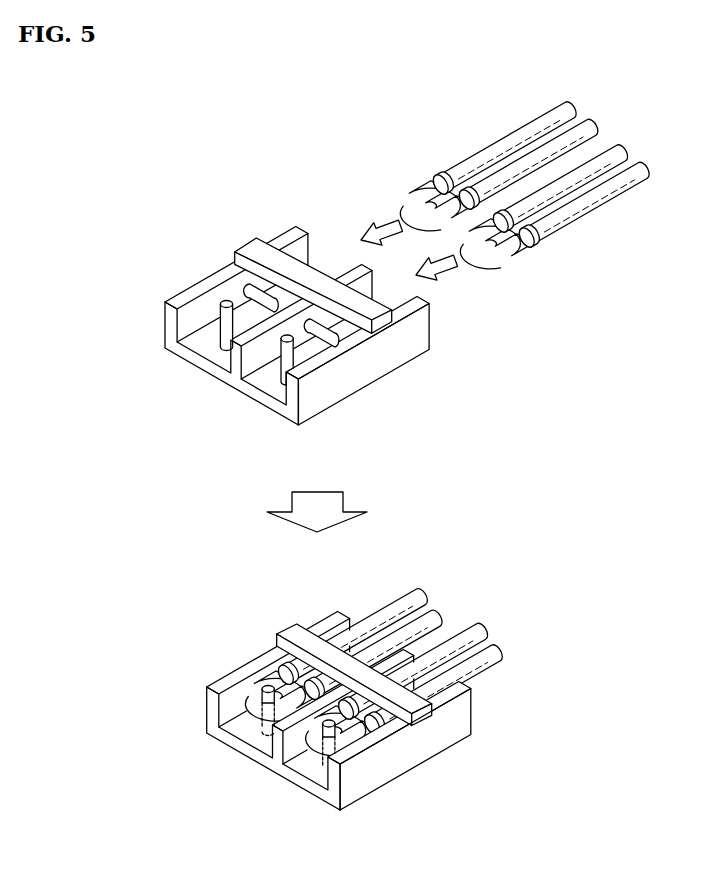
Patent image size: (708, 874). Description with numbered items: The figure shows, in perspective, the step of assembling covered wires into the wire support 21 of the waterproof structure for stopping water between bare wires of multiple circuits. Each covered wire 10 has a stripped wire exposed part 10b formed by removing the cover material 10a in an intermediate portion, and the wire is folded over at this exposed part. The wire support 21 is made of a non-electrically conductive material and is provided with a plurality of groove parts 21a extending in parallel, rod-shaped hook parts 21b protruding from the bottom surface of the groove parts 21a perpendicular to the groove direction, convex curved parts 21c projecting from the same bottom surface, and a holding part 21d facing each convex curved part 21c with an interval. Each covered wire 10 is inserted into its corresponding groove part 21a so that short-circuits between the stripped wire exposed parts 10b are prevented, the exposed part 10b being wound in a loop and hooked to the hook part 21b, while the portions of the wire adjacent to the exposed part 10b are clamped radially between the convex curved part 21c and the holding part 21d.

The covered wire 10 is at (441, 442).
The cover material 10a is at (584, 122).
The stripped wire exposed part 10b is at (409, 198).
The wire support 21 is at (368, 398).
The groove part 21a is at (188, 343).
The hook part 21b is at (220, 322).
The convex curved part 21c is at (257, 300).
The holding part 21d is at (249, 248).